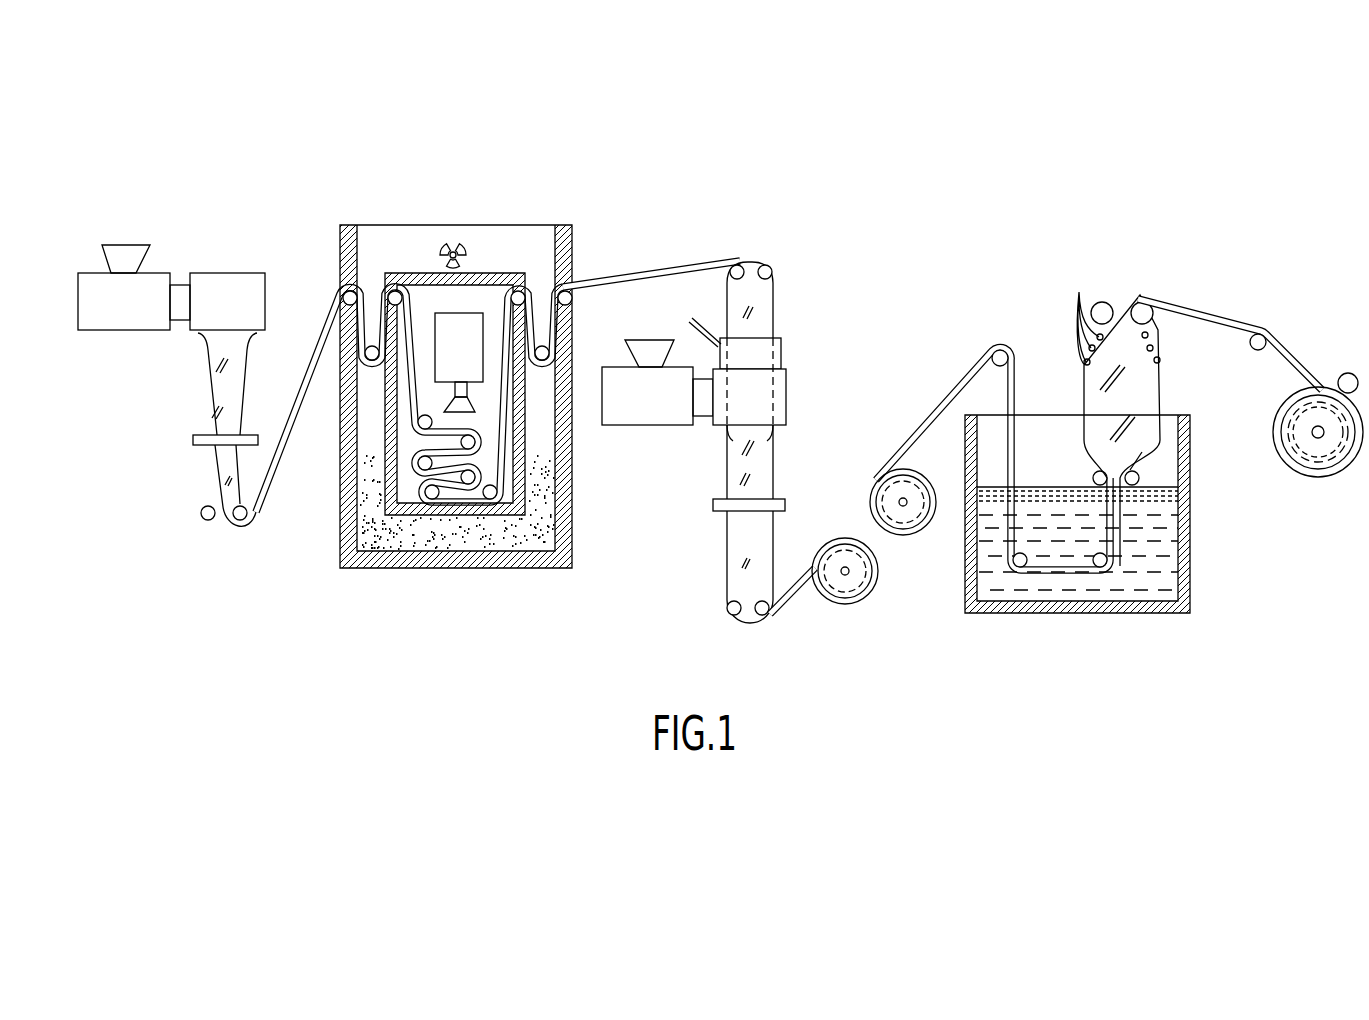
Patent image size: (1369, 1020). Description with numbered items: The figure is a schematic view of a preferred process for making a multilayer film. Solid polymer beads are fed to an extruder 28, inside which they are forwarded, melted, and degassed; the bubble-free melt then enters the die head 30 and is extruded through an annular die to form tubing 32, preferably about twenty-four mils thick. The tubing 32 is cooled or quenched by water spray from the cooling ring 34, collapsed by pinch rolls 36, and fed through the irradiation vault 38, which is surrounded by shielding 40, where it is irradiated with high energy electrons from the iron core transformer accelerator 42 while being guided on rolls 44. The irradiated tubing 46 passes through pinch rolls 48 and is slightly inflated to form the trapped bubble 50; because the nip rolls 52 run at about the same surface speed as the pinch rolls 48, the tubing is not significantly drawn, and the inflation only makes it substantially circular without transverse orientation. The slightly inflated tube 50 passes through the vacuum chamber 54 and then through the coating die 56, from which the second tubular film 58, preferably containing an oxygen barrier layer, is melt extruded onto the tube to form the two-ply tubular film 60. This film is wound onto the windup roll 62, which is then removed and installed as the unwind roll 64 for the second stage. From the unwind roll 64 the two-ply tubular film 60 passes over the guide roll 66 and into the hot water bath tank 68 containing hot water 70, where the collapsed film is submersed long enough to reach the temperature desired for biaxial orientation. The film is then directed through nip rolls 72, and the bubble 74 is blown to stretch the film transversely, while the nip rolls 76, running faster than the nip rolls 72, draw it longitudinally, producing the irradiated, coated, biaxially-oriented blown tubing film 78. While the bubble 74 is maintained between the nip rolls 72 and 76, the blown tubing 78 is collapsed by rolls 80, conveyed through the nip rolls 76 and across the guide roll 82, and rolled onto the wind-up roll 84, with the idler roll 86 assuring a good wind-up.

The extruder 28 is at (152, 283).
The die head 30 is at (228, 288).
The tubing 32 is at (203, 360).
The cooling ring 34 is at (195, 437).
The pinch rolls 36 is at (202, 510).
The irradiation vault 38 is at (527, 447).
The shielding 40 is at (425, 548).
The iron core transformer accelerator 42 is at (445, 313).
The rolls 44 is at (425, 492).
The irradiated tubing 46 is at (674, 266).
The pinch rolls 48 is at (762, 270).
The trapped bubble 50 is at (773, 316).
The nip rolls 52 is at (722, 602).
The vacuum chamber 54 is at (783, 348).
The coating die 56 is at (788, 400).
The second tubular film 58 is at (726, 439).
The two-ply tubular film 60 is at (773, 482).
The windup roll 62 is at (837, 602).
The unwind roll 64 is at (928, 525).
The guide roll 66 is at (990, 348).
The hot water bath tank 68 is at (1190, 570).
The hot water 70 is at (1165, 525).
The nip rolls 72 is at (1094, 474).
The bubble 74 is at (1147, 387).
The nip rolls 76 is at (1150, 299).
The blown tubing film 78 is at (1225, 308).
The rolls 80 is at (1079, 292).
The guide roll 82 is at (1262, 336).
The wind-up roll 84 is at (1328, 478).
The idler roll 86 is at (1352, 375).